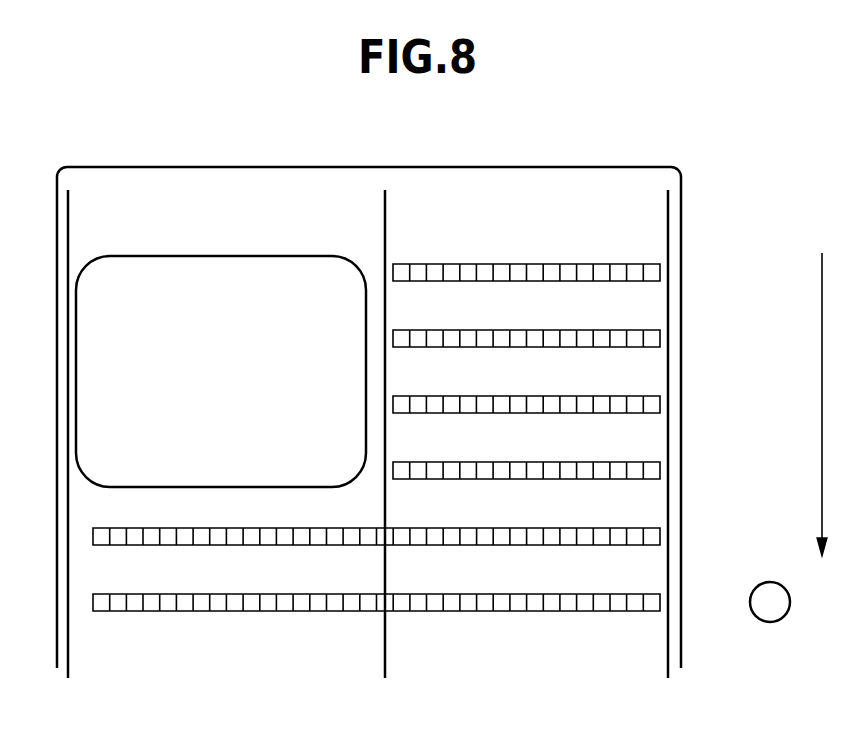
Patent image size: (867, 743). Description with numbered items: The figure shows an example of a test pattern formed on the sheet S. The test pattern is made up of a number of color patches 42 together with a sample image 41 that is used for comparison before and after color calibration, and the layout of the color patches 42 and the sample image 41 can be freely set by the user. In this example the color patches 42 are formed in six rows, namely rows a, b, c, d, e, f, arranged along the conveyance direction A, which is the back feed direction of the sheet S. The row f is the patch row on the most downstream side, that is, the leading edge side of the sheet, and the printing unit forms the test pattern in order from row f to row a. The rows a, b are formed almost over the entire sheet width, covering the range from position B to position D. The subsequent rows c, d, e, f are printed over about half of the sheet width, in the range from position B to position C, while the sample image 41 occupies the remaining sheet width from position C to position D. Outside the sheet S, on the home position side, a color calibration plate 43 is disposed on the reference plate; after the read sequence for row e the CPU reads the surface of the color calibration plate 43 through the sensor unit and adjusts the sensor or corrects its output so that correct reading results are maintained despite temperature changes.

The sheet S is at (88, 212).
The sample image 41 is at (88, 372).
The color patches 42 is at (436, 437).
The color calibration plate 43 is at (770, 622).
The row a is at (660, 602).
The row b is at (660, 536).
The row c is at (660, 470).
The row d is at (660, 404).
The row e is at (660, 338).
The row f is at (553, 273).
The conveyance direction A is at (822, 419).
The position B is at (667, 449).
The position C is at (385, 449).
The position D is at (68, 449).